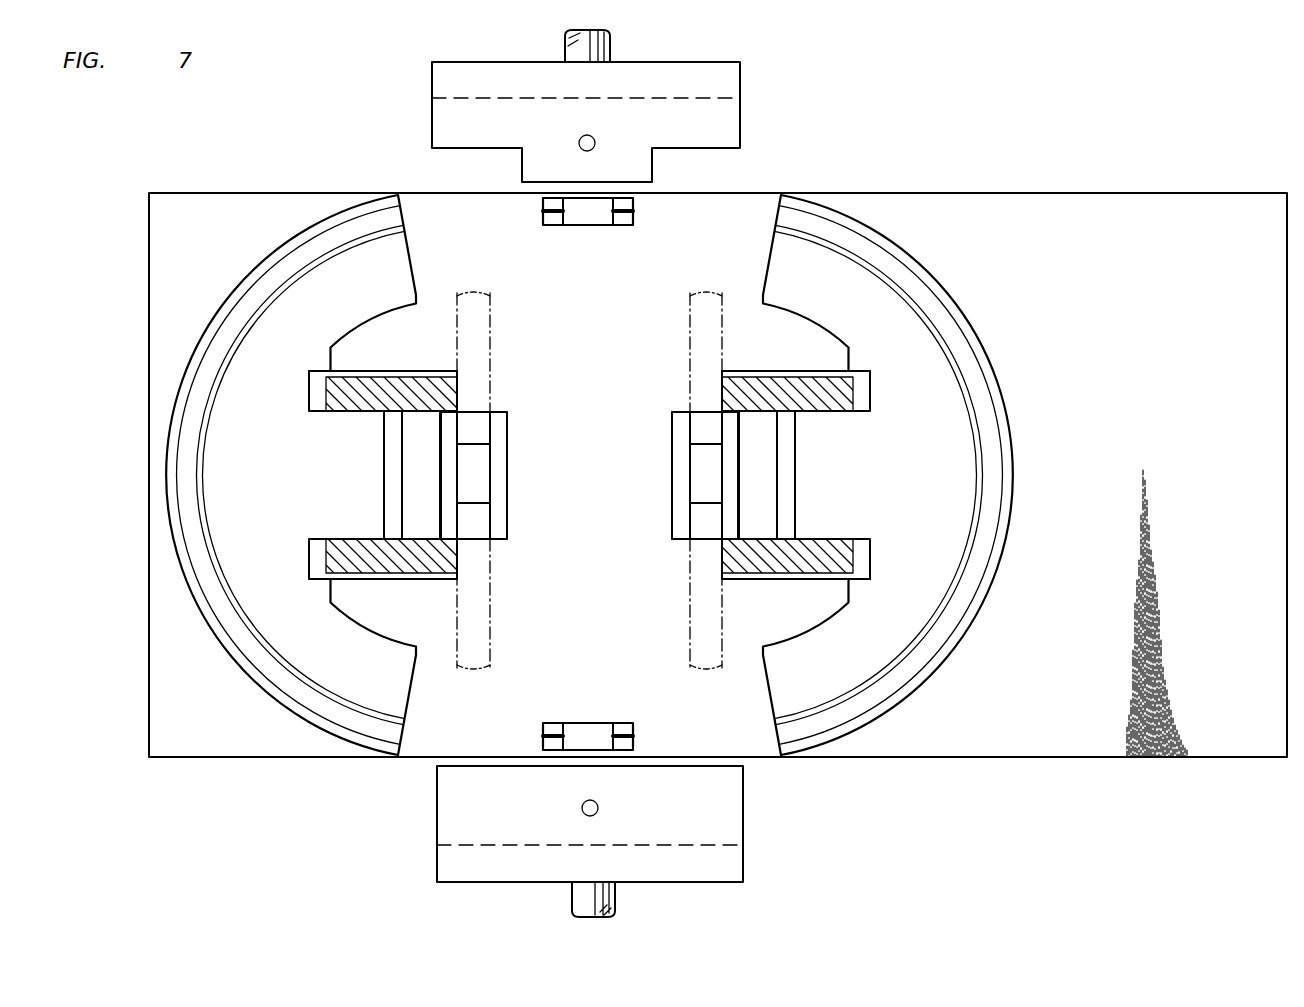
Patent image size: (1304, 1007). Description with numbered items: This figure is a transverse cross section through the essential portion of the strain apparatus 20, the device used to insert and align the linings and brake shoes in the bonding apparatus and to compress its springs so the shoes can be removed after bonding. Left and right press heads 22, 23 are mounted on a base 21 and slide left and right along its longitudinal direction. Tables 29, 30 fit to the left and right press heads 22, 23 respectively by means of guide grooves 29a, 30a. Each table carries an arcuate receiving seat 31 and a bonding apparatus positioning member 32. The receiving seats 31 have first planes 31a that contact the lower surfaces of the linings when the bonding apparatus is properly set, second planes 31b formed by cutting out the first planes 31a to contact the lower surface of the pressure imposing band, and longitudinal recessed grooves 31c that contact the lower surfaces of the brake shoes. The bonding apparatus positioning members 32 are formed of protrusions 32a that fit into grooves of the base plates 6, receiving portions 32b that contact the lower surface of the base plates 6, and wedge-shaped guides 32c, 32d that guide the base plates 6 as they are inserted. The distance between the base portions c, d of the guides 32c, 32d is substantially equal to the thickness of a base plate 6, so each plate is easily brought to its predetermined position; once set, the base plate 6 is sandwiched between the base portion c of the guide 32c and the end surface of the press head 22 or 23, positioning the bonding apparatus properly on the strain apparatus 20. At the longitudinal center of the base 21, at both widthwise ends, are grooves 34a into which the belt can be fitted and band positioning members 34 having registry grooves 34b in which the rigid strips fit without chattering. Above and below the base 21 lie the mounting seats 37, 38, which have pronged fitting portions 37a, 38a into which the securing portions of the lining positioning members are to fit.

The base plate 6 is at (492, 310).
The strain apparatus 20 is at (870, 183).
The base 21 is at (1120, 212).
The press head 22 is at (410, 380).
The press head 23 is at (768, 380).
The table 29 is at (235, 662).
The guide groove 29a is at (356, 412).
The table 30 is at (967, 640).
The guide groove 30a is at (819, 412).
The receiving seat 31 is at (213, 635).
The first plane 31a is at (215, 590).
The second plane 31b is at (193, 580).
The longitudinal recessed groove 31c is at (203, 535).
The bonding apparatus positioning member 32 is at (466, 402).
The protrusion 32a is at (477, 442).
The receiving portion 32b is at (492, 408).
The wedge-shaped guide 32c is at (487, 485).
The wedge-shaped guide 32d is at (440, 495).
The band positioning member 34 is at (598, 226).
The groove 34a is at (545, 210).
The registry groove 34b is at (572, 227).
The mounting seat 37 is at (725, 77).
The pronged fitting portion 37a is at (722, 100).
The mounting seat 38 is at (730, 865).
The pronged fitting portion 38a is at (725, 845).
The base portion of guide c is at (507, 492).
The base portion of guide d is at (465, 458).